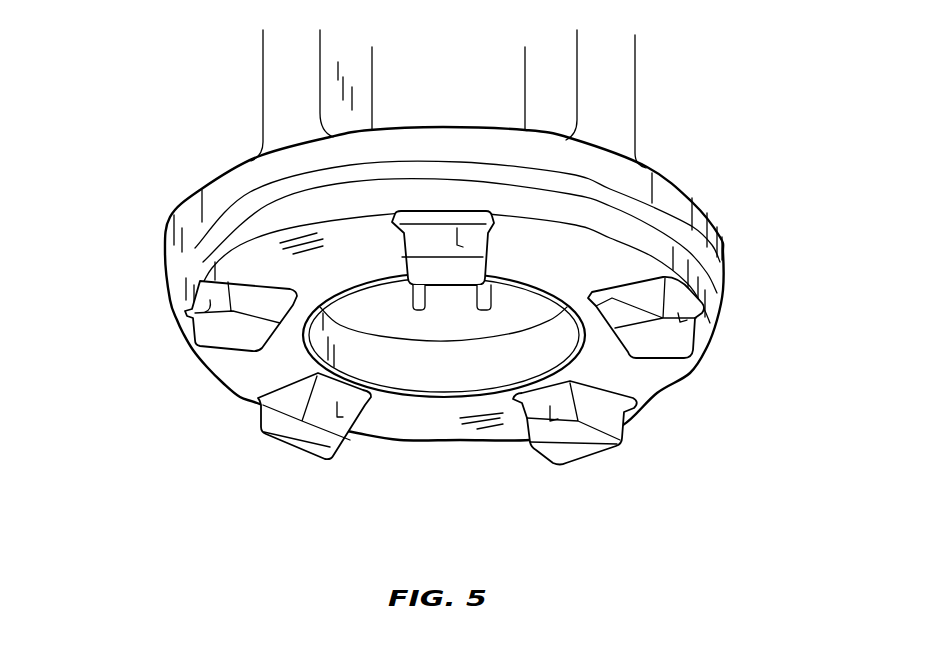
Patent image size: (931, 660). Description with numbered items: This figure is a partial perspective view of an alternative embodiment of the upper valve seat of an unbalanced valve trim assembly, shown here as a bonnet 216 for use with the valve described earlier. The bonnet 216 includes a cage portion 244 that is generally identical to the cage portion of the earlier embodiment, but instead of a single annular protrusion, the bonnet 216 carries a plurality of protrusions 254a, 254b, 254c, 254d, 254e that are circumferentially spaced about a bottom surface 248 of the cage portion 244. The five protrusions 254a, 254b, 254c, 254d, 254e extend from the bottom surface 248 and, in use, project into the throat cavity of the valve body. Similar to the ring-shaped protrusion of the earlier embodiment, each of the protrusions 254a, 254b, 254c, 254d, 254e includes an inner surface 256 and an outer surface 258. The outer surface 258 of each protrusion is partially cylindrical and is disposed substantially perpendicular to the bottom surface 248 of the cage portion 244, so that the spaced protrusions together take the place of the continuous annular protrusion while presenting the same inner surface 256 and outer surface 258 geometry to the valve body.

The bonnet 216 is at (152, 260).
The cage portion 244 is at (281, 77).
The bottom surface 248 is at (424, 424).
The protrusion 254a is at (223, 337).
The protrusion 254b is at (443, 272).
The protrusion 254c is at (663, 343).
The protrusion 254d is at (585, 443).
The protrusion 254e is at (303, 438).
The inner surface 256 is at (437, 288).
The outer surface 258 is at (190, 312).